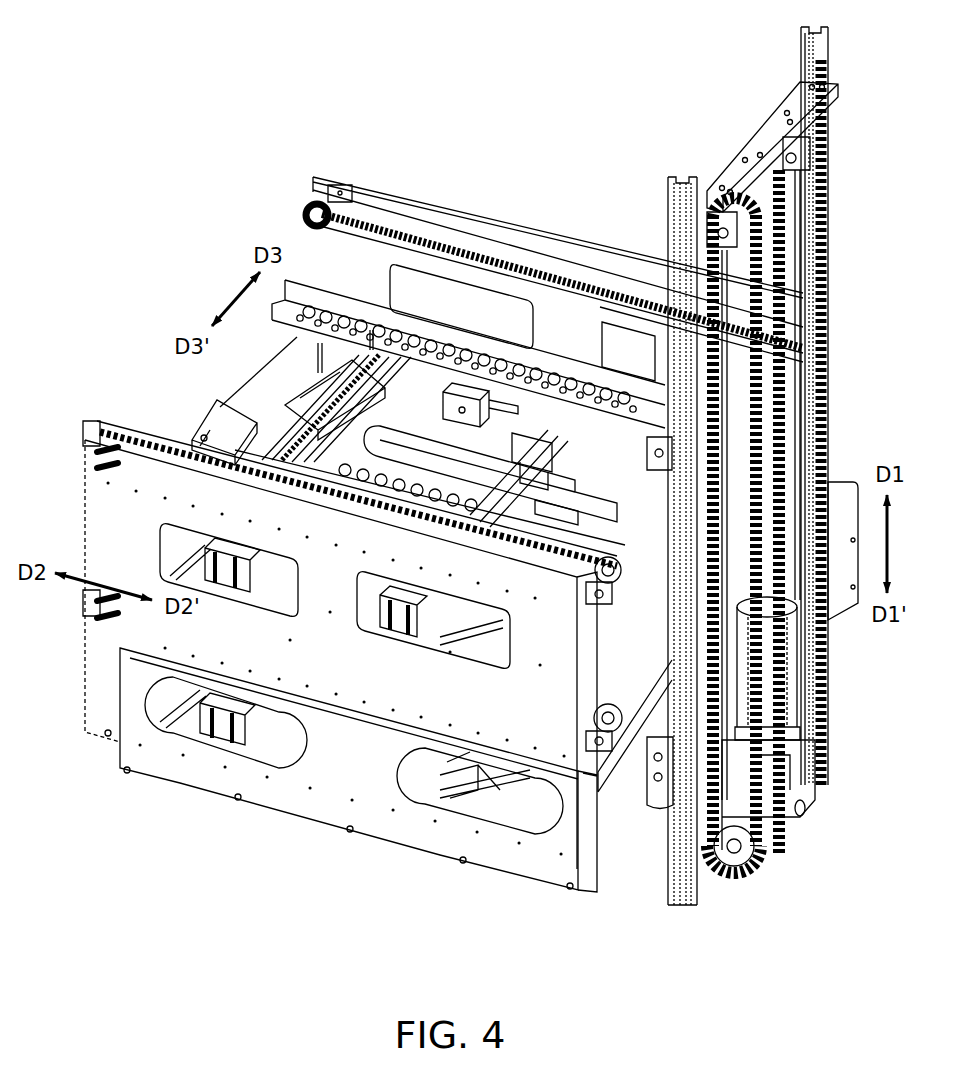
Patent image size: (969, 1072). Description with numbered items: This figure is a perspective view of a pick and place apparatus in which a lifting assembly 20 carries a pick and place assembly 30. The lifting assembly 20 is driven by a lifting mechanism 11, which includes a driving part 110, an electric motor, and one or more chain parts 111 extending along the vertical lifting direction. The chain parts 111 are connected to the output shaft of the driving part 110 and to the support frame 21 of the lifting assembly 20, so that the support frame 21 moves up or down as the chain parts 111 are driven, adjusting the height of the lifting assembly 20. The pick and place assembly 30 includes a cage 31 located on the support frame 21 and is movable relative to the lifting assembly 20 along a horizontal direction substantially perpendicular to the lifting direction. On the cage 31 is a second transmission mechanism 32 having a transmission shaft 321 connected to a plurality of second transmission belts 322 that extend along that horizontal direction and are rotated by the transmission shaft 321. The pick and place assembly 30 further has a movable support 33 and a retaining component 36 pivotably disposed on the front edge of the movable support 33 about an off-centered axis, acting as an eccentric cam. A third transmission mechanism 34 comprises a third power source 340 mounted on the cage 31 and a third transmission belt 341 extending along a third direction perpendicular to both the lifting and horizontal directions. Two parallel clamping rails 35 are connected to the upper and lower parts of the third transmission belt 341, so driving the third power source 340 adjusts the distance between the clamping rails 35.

The lifting mechanism 11 is at (846, 238).
The driving part 110 is at (797, 680).
The chain parts 111 is at (830, 731).
The lifting assembly 20 is at (428, 866).
The support frame 21 is at (380, 822).
The pick and place assembly 30 is at (76, 488).
The cage 31 is at (117, 507).
The second transmission mechanism 32 is at (622, 600).
The transmission shaft 321 is at (648, 472).
The second transmission belts 322 is at (617, 278).
The movable support 33 is at (608, 452).
The third transmission mechanism 34 is at (483, 163).
The third power source 340 is at (457, 400).
The third transmission belt 341 is at (372, 392).
The clamping rails 35 is at (308, 292).
The retaining component 36 is at (590, 453).